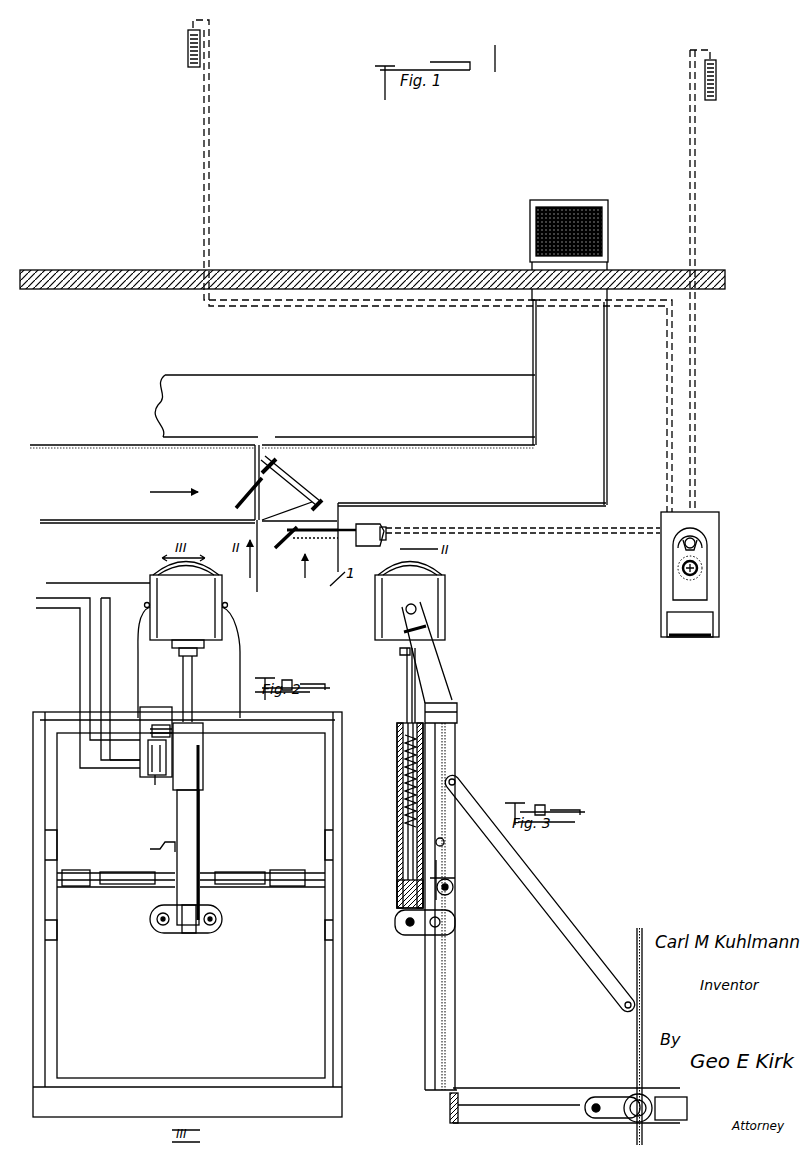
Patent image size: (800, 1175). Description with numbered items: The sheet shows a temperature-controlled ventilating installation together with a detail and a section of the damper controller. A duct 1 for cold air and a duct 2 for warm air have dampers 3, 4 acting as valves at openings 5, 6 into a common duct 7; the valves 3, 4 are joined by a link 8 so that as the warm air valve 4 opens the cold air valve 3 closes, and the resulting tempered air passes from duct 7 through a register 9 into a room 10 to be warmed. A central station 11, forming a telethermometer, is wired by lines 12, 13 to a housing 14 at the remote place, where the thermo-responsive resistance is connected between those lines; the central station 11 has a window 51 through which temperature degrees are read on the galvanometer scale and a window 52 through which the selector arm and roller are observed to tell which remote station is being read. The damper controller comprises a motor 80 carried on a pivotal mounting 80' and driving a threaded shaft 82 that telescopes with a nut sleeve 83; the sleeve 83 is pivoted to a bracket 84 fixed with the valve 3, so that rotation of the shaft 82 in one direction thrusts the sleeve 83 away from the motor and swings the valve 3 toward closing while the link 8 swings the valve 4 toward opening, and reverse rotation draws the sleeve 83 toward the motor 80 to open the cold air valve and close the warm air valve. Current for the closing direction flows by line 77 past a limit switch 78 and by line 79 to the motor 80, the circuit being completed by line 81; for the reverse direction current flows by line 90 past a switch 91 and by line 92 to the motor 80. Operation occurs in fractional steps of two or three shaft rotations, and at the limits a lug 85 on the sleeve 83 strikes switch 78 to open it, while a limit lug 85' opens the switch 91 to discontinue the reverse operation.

In FIG. 1, the duct 1 is at (340, 440).
In FIG. 1, the duct 2 is at (175, 400).
In FIG. 1, the damper 3 is at (327, 513).
In FIG. 2, the damper 3 is at (305, 1027).
In FIG. 3, the damper 3 is at (438, 968).
In FIG. 1, the damper 4 is at (255, 470).
In FIG. 3, the damper 4 is at (635, 1030).
In FIG. 1, the opening 5 is at (363, 500).
In FIG. 3, the opening 5 is at (450, 1050).
In FIG. 1, the opening 6 is at (264, 456).
In FIG. 3, the opening 6 is at (515, 1100).
In FIG. 1, the common duct 7 is at (398, 462).
In FIG. 1, the link 8 is at (300, 481).
In FIG. 3, the link 8 is at (552, 908).
In FIG. 1, the register 9 is at (604, 222).
In FIG. 1, the room 10 is at (462, 258).
In FIG. 1, the central station 11 is at (714, 584).
In FIG. 1, the line 12 is at (206, 86).
In FIG. 1, the line 13 is at (205, 88).
In FIG. 1, the housing 14 is at (199, 52).
In FIG. 1, the window 51 is at (703, 543).
In FIG. 1, the window 52 is at (681, 570).
In FIG. 2, the line 77 is at (80, 650).
In FIG. 2, the limit switch 78 is at (145, 785).
In FIG. 2, the line 79 is at (112, 705).
In FIG. 1, the motor 80 is at (518, 524).
In FIG. 2, the motor 80 is at (186, 621).
In FIG. 3, the motor 80 is at (427, 643).
In FIG. 1, the pivotal mounting 80' is at (361, 527).
In FIG. 2, the pivotal mounting 80' is at (208, 661).
In FIG. 3, the pivotal mounting 80' is at (450, 652).
In FIG. 2, the line 81 is at (113, 583).
In FIG. 2, the shaft 82 is at (195, 690).
In FIG. 3, the shaft 82 is at (415, 685).
In FIG. 2, the sleeve 83 is at (190, 838).
In FIG. 3, the sleeve 83 is at (397, 773).
In FIG. 2, the bracket 84 is at (192, 936).
In FIG. 3, the bracket 84 is at (400, 936).
In FIG. 2, the lug 85 is at (149, 850).
In FIG. 2, the limit lug 85' is at (162, 715).
In FIG. 2, the line 90 is at (88, 681).
In FIG. 2, the switch 91 is at (178, 733).
In FIG. 2, the line 92 is at (103, 648).